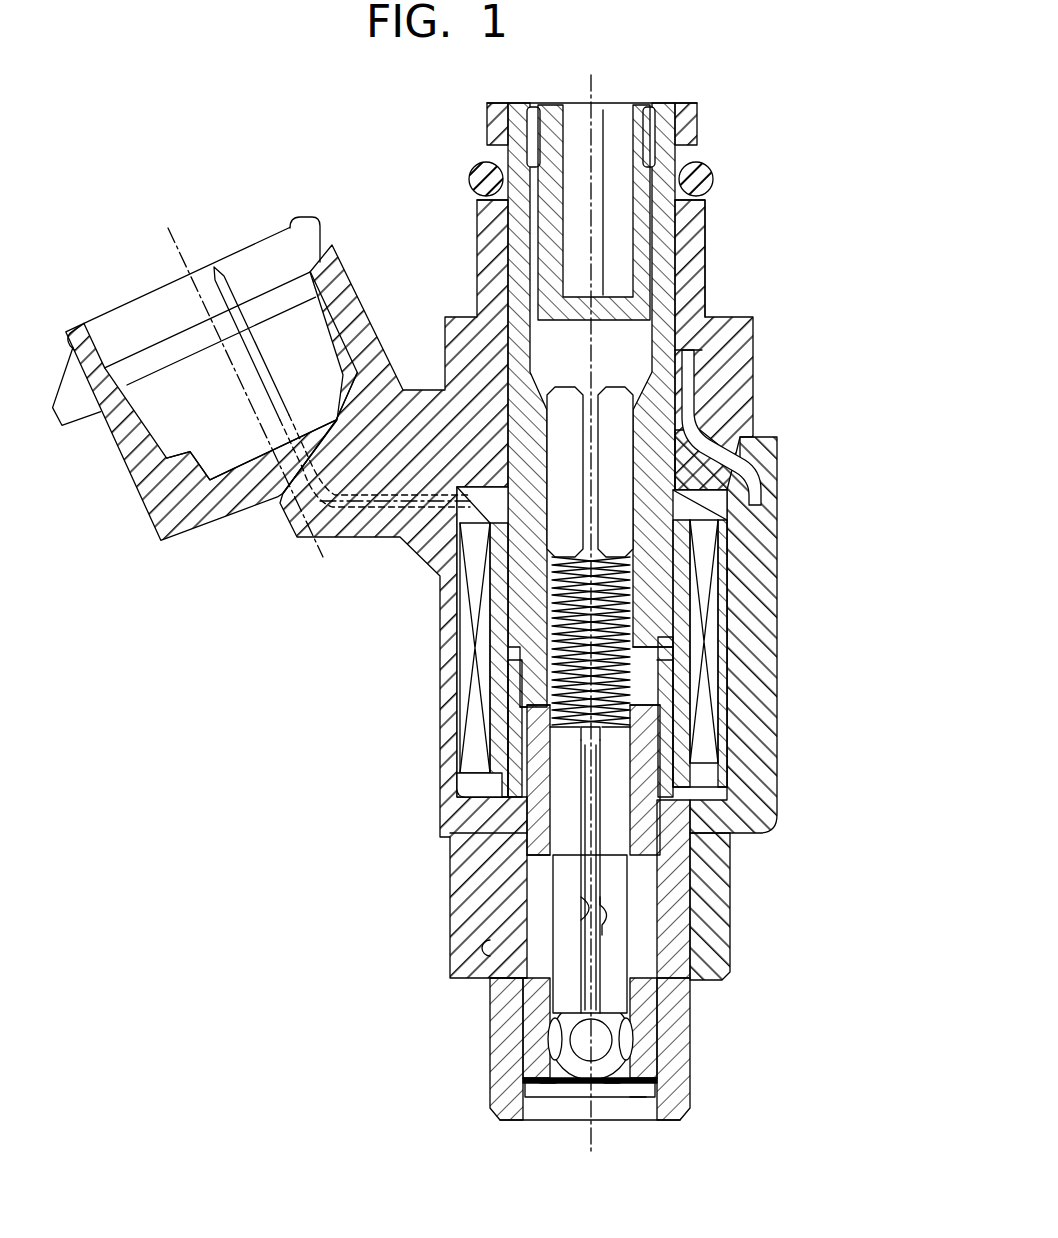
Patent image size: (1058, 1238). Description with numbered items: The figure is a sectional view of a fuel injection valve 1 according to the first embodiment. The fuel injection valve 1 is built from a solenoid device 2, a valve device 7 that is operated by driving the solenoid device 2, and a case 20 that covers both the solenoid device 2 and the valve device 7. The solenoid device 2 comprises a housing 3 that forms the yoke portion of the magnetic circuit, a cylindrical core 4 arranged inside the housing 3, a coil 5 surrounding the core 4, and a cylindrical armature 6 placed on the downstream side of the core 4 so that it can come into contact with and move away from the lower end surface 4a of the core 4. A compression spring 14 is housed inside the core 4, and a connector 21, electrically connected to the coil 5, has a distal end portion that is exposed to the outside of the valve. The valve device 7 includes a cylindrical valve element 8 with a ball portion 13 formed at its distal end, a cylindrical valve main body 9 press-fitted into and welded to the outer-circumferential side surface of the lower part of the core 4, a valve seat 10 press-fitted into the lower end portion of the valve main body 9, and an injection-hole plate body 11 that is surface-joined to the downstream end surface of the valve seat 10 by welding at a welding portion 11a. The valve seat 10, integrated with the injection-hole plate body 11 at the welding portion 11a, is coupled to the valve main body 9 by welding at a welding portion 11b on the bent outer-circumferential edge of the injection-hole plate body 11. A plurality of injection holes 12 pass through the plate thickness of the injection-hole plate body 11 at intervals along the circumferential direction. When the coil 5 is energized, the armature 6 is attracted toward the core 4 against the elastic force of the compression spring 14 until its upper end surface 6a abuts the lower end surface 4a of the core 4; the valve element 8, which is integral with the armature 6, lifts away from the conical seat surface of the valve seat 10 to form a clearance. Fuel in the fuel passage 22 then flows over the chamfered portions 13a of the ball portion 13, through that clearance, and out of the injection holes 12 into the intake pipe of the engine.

The fuel injection valve 1 is at (757, 86).
The solenoid device 2 is at (697, 370).
The housing 3 is at (740, 500).
The core 4 is at (657, 602).
The lower end surface of the core 4a is at (643, 713).
The coil 5 is at (715, 645).
The armature 6 is at (647, 770).
The upper end surface of the armature 6a is at (547, 697).
The valve device 7 is at (677, 918).
The valve element 8 is at (630, 868).
The valve main body 9 is at (690, 1038).
The valve seat 10 is at (530, 1022).
The injection-hole plate body 11 is at (540, 1075).
The welding portion 11a is at (546, 1085).
The welding portion 11b is at (638, 1098).
The injection holes 12 is at (612, 1087).
The ball portion 13 is at (568, 1020).
The chamfered portions 13a is at (623, 1033).
The compression spring 14 is at (545, 622).
The case 20 is at (705, 240).
The connector 21 is at (233, 292).
The fuel passage 22 is at (537, 888).